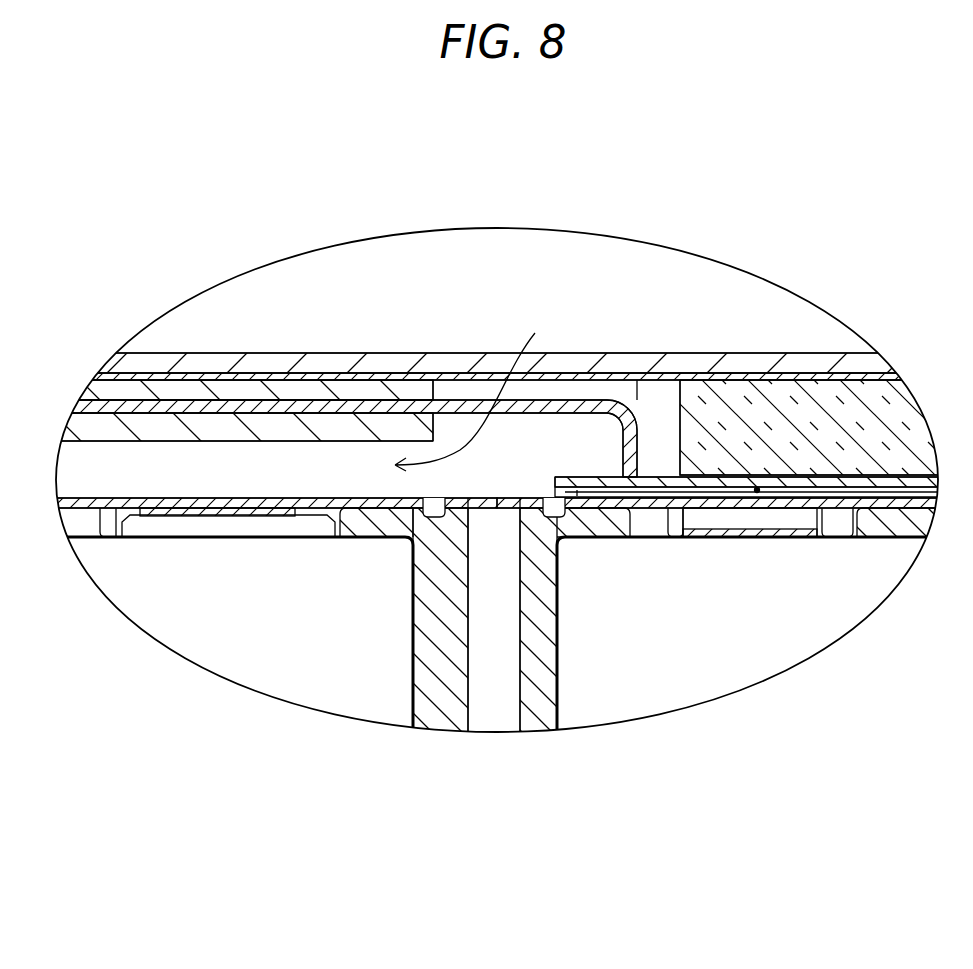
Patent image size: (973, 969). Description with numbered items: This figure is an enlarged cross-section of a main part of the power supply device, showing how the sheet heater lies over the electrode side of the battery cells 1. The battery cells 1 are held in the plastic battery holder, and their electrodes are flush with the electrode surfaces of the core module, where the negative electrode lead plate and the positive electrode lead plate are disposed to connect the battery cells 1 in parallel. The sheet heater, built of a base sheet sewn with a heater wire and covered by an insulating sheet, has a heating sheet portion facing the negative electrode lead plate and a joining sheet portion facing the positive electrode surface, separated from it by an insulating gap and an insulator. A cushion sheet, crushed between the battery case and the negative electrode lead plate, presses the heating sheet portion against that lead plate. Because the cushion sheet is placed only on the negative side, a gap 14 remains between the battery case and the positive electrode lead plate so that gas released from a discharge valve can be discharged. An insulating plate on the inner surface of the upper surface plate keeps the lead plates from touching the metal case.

The battery cell 1 is at (234, 645).
The gap 14 is at (482, 372).